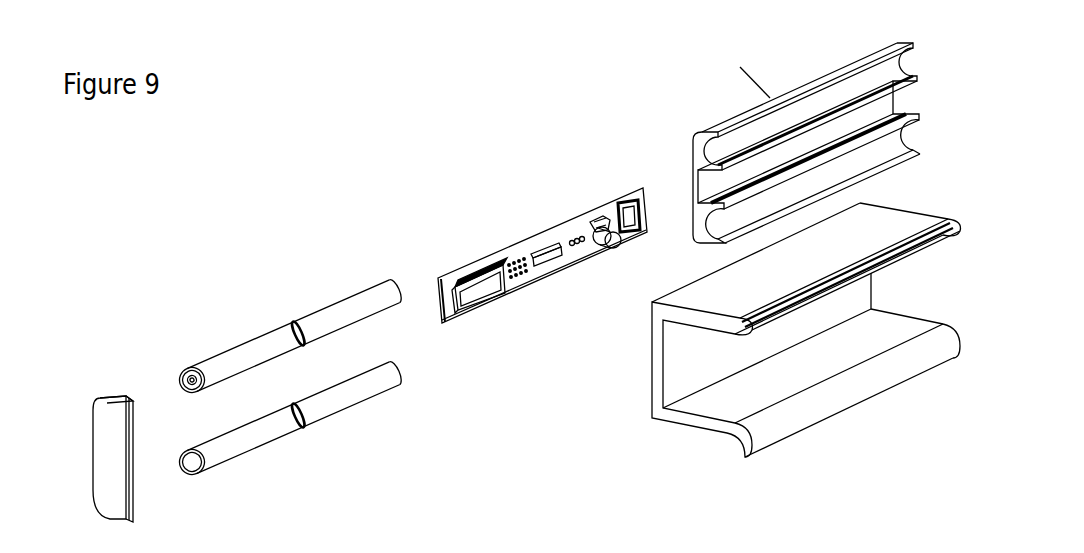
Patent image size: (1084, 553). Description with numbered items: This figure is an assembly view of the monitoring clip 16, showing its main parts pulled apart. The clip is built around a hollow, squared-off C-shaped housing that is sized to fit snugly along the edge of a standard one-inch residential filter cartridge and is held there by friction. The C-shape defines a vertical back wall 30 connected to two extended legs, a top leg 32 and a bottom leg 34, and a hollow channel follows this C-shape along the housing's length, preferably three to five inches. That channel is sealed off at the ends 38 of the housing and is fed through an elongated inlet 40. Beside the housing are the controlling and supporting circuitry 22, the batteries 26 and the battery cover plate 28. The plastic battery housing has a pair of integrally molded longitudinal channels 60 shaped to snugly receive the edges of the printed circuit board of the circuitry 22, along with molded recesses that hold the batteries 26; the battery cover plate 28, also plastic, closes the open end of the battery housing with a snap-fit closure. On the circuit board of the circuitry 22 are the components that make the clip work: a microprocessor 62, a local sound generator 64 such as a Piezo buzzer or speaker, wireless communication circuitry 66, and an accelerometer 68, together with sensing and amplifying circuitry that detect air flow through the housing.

The monitoring clip 16 is at (766, 338).
The controlling and supporting circuitry 22 is at (567, 227).
The batteries 26 is at (335, 310).
The battery cover plate 28 is at (108, 415).
The vertical back wall 30 is at (677, 362).
The top leg 32 is at (882, 218).
The bottom leg 34 is at (885, 327).
The ends 38 is at (720, 428).
The elongated inlet 40 is at (758, 303).
The longitudinal channels 60 is at (547, 266).
The microprocessor 62 is at (477, 292).
The local sound generator 64 is at (602, 252).
The wireless communication circuitry 66 is at (633, 205).
The accelerometer 68 is at (602, 215).